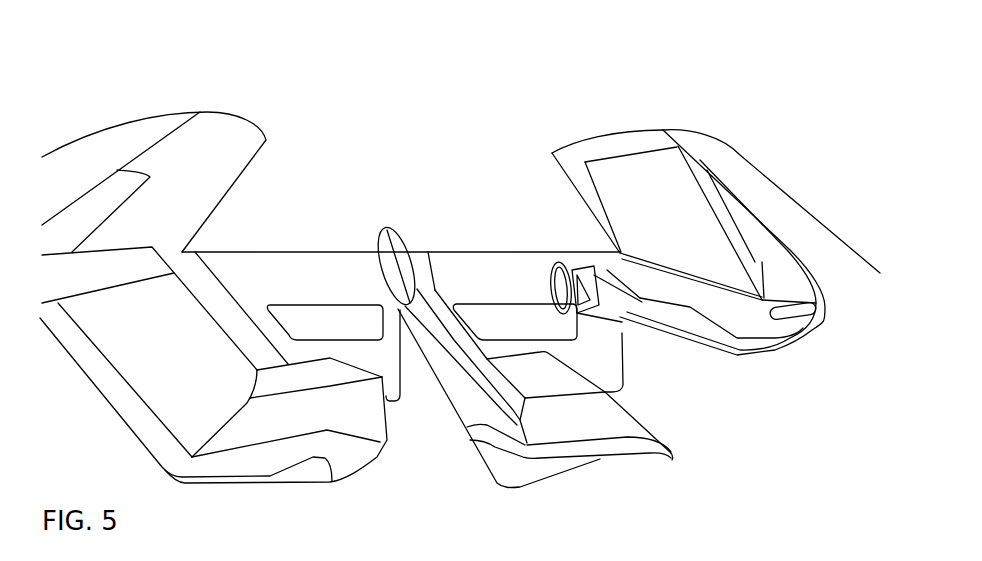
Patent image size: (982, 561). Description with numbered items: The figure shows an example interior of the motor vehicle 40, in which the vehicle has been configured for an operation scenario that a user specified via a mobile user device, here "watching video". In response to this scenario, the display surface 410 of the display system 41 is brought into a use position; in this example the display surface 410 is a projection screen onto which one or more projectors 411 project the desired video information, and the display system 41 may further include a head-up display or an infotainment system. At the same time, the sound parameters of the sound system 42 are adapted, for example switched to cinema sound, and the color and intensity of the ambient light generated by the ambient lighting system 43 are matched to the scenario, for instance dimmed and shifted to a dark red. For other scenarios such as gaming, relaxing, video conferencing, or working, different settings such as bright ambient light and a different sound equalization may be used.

The motor vehicle 40 is at (420, 108).
The display system 41 is at (577, 228).
The display surface 410 is at (618, 155).
The projectors 411 is at (762, 265).
The sound system 42 is at (793, 311).
The ambient lighting system 43 is at (492, 303).